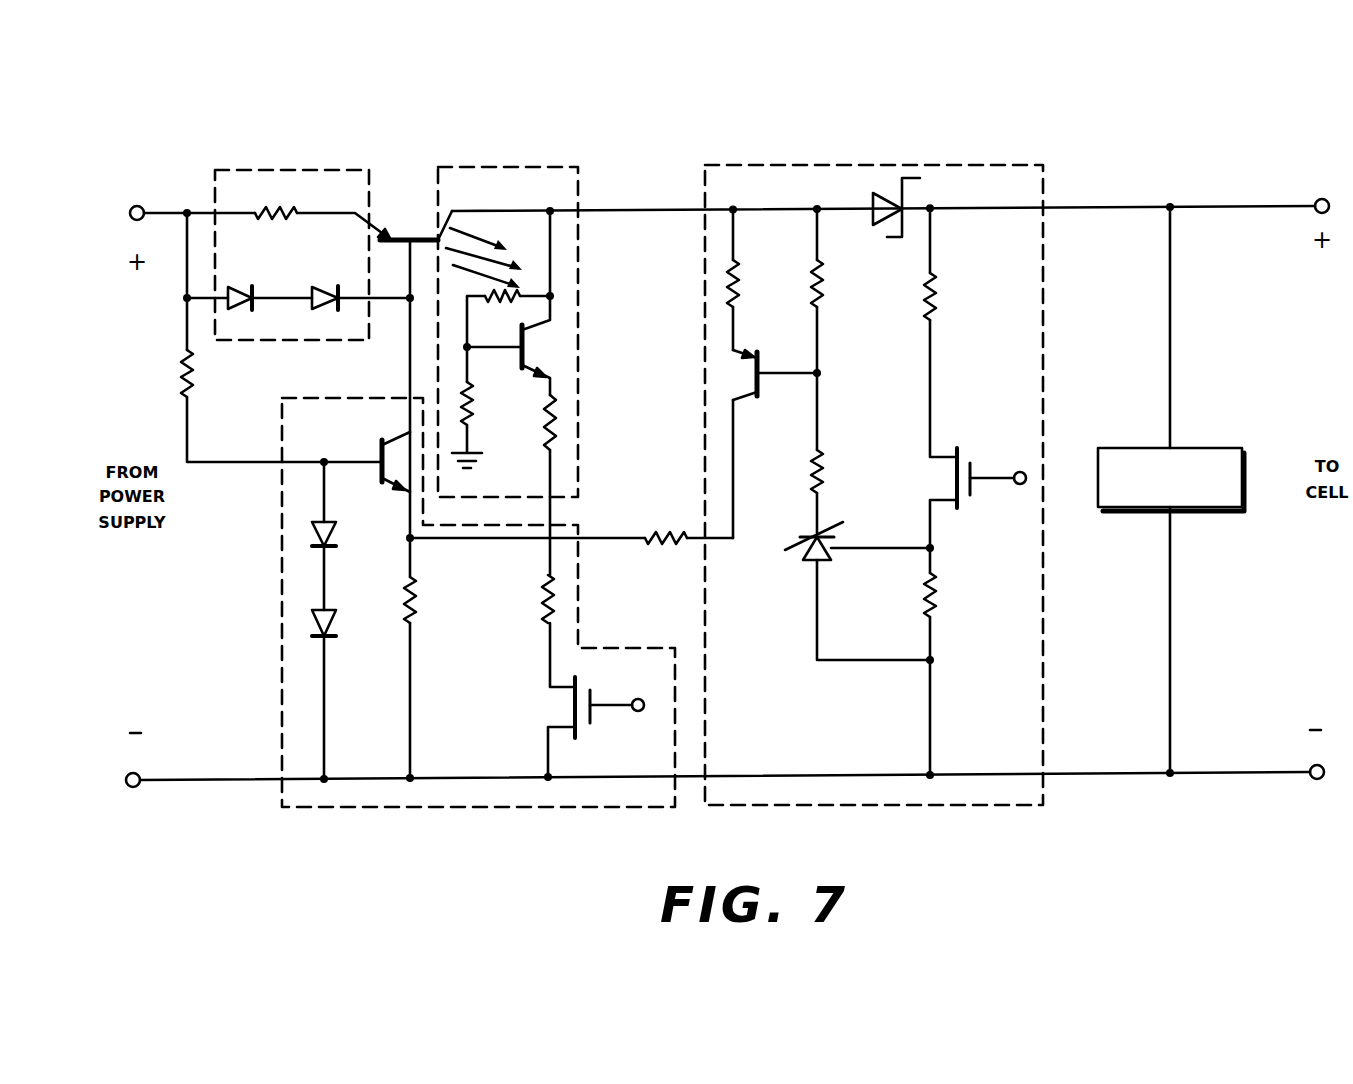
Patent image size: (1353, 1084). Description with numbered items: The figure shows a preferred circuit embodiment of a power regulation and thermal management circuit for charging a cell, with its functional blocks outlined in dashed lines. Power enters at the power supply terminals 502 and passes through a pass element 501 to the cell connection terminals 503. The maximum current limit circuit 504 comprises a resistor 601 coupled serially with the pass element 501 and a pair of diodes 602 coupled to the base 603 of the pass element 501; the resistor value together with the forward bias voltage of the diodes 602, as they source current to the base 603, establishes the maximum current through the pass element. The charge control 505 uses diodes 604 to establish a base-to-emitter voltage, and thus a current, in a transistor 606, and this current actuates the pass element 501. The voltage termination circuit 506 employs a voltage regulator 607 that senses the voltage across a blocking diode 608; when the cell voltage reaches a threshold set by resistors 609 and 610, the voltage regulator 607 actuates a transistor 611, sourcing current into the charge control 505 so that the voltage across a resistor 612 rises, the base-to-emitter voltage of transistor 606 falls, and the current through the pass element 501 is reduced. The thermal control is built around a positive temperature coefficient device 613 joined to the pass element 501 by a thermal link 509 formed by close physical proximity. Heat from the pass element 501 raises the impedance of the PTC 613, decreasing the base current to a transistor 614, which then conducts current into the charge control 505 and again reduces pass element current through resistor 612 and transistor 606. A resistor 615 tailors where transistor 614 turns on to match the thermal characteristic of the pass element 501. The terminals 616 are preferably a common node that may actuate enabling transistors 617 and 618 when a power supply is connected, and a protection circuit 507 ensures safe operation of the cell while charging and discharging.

The pass element 501 is at (428, 233).
The power supply terminals 502 is at (133, 788).
The cell connection terminals 503 is at (1317, 782).
The maximum current limit circuit 504 is at (218, 170).
The charge control 505 is at (282, 573).
The voltage termination circuit 506 is at (705, 163).
The protection circuit 507 is at (1098, 450).
The thermal link 509 is at (487, 250).
The resistor 601 is at (262, 213).
The pair of diodes 602 is at (330, 288).
The base 603 is at (410, 383).
The diodes 604 is at (336, 620).
The transistor 606 is at (392, 450).
The voltage regulator 607 is at (808, 556).
The blocking diode 608 is at (880, 222).
The resistor 609 is at (937, 300).
The resistor 610 is at (938, 585).
The transistor 611 is at (763, 397).
The resistor 612 is at (418, 600).
The positive temperature coefficient device 613 is at (547, 292).
The transistor 614 is at (543, 366).
The resistor 615 is at (473, 388).
The terminals 616 is at (1020, 486).
The enabling transistor 617 is at (952, 478).
The enabling transistor 618 is at (565, 704).